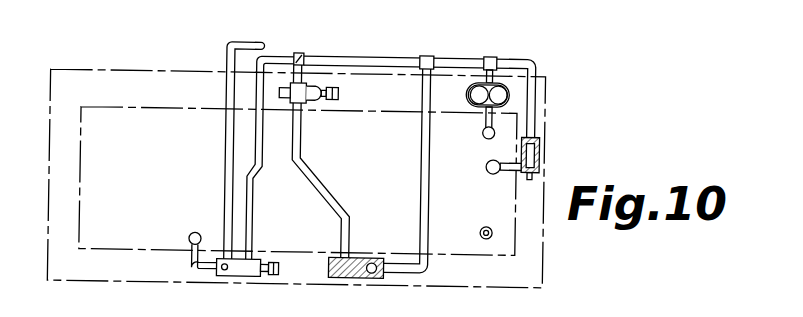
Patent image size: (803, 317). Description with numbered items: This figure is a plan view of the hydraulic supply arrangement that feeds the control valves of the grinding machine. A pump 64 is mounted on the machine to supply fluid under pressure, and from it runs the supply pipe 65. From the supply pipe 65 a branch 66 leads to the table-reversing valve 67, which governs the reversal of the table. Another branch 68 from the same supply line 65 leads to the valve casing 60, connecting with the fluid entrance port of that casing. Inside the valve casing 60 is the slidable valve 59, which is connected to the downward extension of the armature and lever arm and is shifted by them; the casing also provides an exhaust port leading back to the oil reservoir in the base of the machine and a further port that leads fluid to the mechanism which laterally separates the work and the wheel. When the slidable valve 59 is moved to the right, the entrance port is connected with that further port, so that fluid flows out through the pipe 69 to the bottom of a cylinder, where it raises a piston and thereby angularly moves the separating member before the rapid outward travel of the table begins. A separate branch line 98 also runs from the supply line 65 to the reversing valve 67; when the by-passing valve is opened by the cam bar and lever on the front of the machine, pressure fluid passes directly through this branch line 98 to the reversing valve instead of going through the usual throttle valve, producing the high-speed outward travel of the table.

The slidable valve 59 is at (268, 273).
The valve casing 60 is at (233, 277).
The pump 64 is at (497, 86).
The supply pipe 65 is at (358, 57).
The branch 66 is at (320, 193).
The table-reversing valve 67 is at (358, 257).
The branch 68 is at (258, 168).
The pipe 69 is at (230, 196).
The branch line 98 is at (429, 208).